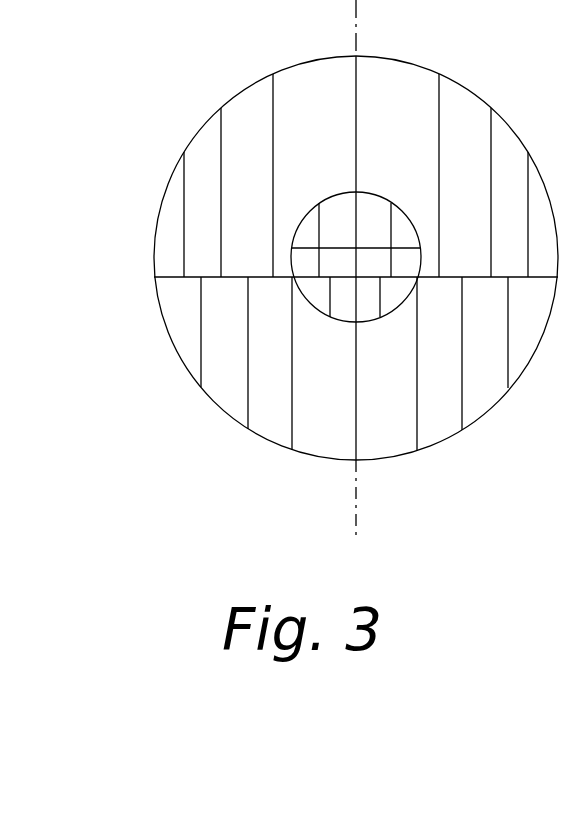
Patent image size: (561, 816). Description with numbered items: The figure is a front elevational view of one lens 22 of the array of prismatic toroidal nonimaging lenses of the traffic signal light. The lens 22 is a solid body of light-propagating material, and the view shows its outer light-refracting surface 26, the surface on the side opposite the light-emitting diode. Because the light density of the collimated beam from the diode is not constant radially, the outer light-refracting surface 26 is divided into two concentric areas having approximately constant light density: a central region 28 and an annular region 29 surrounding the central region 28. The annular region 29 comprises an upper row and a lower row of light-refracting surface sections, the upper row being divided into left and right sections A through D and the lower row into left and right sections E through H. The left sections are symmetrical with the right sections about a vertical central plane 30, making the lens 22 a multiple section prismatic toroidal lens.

The lens 22 is at (480, 95).
The central region 28 is at (332, 208).
The outer light-refracting surface 26 is at (477, 378).
The annular region 29 is at (383, 425).
The vertical central plane 30 is at (353, 507).